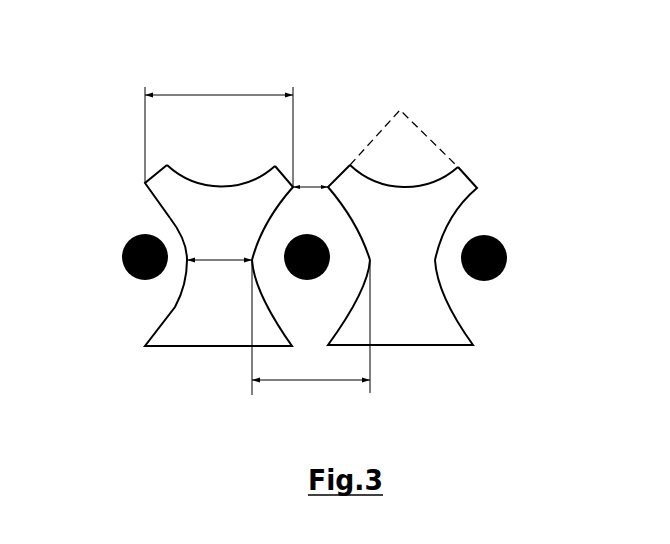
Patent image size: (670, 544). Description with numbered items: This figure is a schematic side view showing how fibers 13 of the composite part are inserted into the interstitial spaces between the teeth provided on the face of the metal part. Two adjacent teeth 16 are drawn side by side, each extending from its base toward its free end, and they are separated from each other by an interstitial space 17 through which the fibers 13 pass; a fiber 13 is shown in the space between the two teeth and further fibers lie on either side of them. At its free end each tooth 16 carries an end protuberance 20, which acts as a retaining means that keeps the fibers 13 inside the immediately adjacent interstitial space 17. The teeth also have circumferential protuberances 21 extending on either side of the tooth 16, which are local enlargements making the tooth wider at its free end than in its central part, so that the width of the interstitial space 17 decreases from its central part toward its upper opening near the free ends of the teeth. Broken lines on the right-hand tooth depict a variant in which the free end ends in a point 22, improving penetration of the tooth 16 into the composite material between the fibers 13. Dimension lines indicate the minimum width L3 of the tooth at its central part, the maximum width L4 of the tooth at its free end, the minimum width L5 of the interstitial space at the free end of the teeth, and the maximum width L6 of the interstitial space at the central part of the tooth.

The fibers 13 is at (123, 258).
The tooth 16 is at (190, 305).
The interstitial space 17 is at (293, 216).
The end protuberance 20 is at (143, 181).
The circumferential protuberances 21 is at (165, 190).
The point 22 is at (408, 135).
The minimum width L3 is at (217, 260).
The maximum width L4 is at (217, 94).
The minimum width L5 is at (310, 187).
The maximum width L6 is at (300, 380).